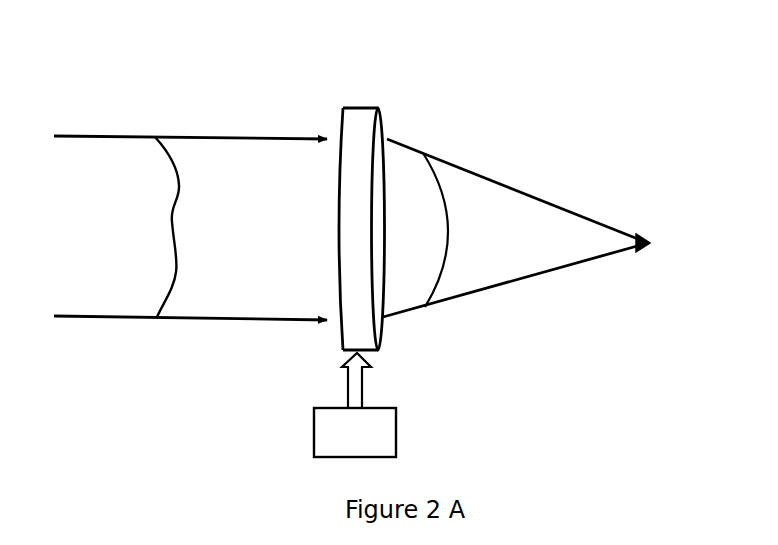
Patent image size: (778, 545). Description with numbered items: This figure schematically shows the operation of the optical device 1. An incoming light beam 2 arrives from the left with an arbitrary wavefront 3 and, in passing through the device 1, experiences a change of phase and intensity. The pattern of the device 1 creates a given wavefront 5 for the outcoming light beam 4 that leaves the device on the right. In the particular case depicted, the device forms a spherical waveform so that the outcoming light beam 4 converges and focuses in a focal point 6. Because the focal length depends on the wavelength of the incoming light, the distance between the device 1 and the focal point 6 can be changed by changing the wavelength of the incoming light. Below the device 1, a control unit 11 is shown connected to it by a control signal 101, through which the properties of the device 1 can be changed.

The device 1 is at (379, 88).
The incoming light beam 2 is at (190, 211).
The arbitrary wavefront 3 is at (171, 227).
The outcoming light beam 4 is at (515, 228).
The given wavefront 5 is at (445, 230).
The focal point 6 is at (643, 228).
The control unit 11 is at (355, 432).
The control signal 101 is at (369, 380).